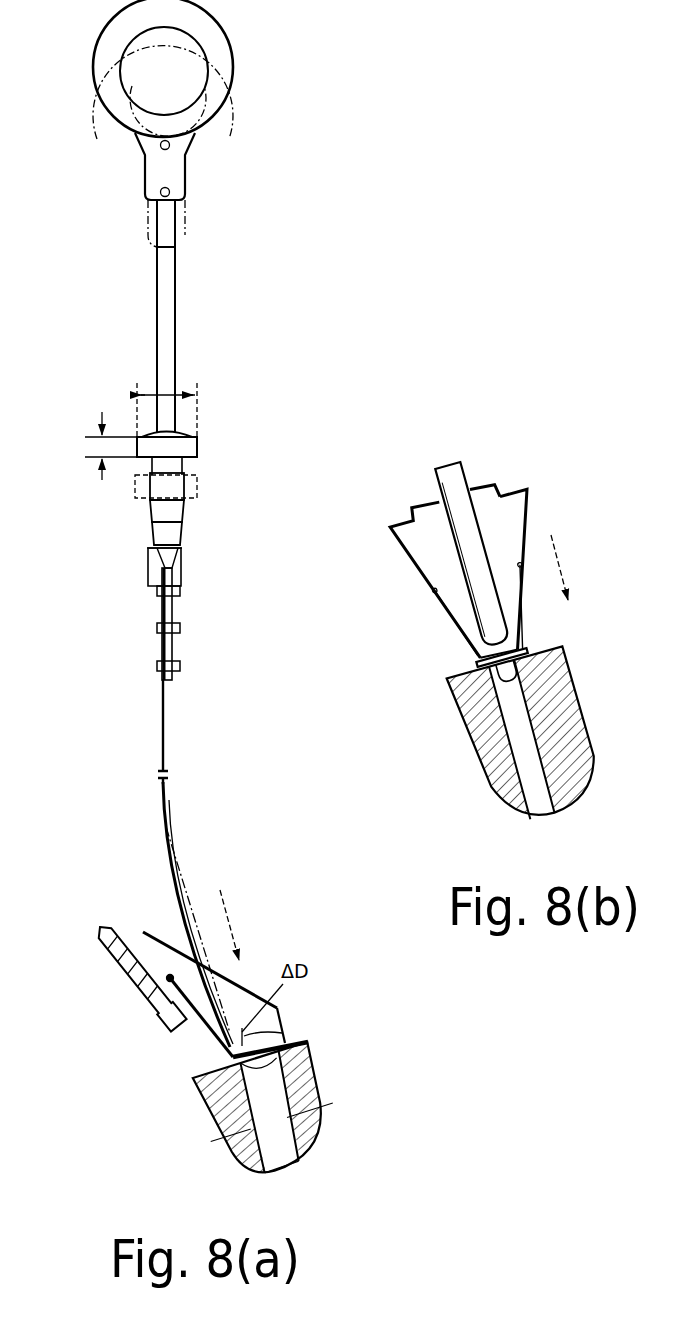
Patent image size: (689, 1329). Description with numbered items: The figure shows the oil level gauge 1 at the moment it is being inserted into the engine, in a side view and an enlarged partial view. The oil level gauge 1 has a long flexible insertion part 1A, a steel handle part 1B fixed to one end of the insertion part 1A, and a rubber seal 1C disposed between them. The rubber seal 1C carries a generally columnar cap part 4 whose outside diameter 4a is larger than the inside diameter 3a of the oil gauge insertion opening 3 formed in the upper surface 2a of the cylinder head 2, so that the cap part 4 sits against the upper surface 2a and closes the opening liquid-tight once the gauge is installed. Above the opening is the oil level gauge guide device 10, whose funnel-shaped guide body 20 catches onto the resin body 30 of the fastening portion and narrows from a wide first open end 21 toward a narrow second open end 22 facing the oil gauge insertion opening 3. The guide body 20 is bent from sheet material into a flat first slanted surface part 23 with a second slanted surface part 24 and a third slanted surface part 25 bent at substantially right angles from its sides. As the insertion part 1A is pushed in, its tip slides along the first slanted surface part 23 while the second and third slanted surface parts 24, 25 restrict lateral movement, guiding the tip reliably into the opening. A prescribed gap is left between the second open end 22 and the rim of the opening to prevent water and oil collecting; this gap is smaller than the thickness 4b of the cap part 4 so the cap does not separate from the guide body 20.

In FIG. 8A, the oil level gauge 1 is at (226, 197).
In FIG. 8A, the insertion part 1A is at (165, 713).
In FIG. 8B, the insertion part 1A is at (458, 558).
In FIG. 8A, the handle part 1B is at (233, 60).
In FIG. 8A, the rubber seal 1C is at (143, 520).
In FIG. 8A, the cylinder head 2 is at (253, 1118).
In FIG. 8B, the cylinder head 2 is at (526, 732).
In FIG. 8A, the upper surface 2a is at (310, 1041).
In FIG. 8B, the upper surface 2a is at (531, 650).
In FIG. 8A, the oil gauge insertion opening 3 is at (271, 1112).
In FIG. 8B, the oil gauge insertion opening 3 is at (503, 693).
In FIG. 8A, the inside diameter 3a is at (281, 1167).
In FIG. 8A, the cap part 4 is at (205, 447).
In FIG. 8A, the outside diameter 4a is at (162, 394).
In FIG. 8A, the thickness 4b is at (98, 450).
In FIG. 8A, the oil level gauge guide device 10 is at (122, 976).
In FIG. 8A, the guide body 20 is at (103, 940).
In FIG. 8B, the guide body 20 is at (474, 479).
In FIG. 8A, the first open end 21 is at (246, 965).
In FIG. 8B, the first open end 21 is at (472, 555).
In FIG. 8A, the second open end 22 is at (257, 1033).
In FIG. 8A, the first slanted surface part 23 is at (160, 940).
In FIG. 8B, the first slanted surface part 23 is at (486, 497).
In FIG. 8B, the second slanted surface part 24 is at (403, 538).
In FIG. 8B, the third slanted surface part 25 is at (512, 533).
In FIG. 8A, the resin body 30 is at (160, 990).